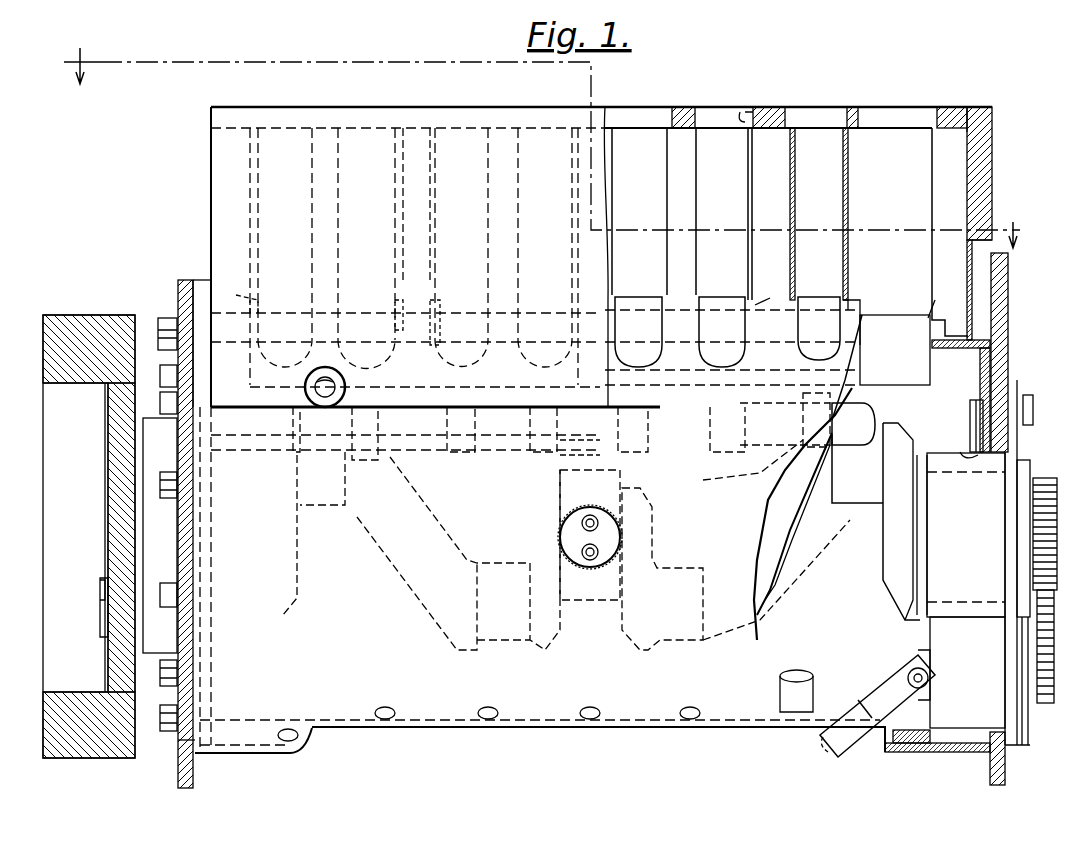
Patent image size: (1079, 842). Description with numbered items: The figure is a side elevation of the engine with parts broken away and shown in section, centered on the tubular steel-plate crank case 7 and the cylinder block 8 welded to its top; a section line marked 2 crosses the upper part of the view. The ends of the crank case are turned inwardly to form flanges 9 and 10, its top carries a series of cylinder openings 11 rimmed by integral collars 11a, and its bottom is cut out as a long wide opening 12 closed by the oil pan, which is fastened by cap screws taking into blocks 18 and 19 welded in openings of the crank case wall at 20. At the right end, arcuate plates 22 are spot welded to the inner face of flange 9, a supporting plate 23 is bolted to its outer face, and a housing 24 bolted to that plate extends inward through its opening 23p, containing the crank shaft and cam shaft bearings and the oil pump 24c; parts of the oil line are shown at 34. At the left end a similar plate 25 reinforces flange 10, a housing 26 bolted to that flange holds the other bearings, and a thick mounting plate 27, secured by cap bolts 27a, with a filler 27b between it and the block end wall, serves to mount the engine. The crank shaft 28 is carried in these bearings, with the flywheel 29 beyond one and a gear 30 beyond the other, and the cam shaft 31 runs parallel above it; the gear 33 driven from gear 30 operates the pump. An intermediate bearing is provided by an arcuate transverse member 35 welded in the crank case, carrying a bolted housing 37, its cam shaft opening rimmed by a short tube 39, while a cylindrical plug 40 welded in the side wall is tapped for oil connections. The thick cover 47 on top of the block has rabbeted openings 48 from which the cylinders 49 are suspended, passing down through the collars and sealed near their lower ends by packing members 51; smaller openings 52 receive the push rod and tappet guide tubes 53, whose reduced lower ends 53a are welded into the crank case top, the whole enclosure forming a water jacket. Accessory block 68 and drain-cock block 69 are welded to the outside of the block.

The section line 2- 2 is at (540, 148).
The crank case 7 is at (354, 704).
The cylinder block 8 is at (205, 190).
The flange 9 is at (990, 368).
The flange 10 is at (195, 735).
The cylinder openings 11 is at (405, 305).
The collars 11a is at (591, 295).
The opening 12 is at (775, 720).
The block 18 is at (813, 680).
The block 19 is at (890, 740).
The weld 20 is at (900, 752).
The plates 22 is at (972, 392).
The supporting plate 23 is at (1020, 775).
The opening 23p is at (985, 760).
The housing 24 is at (1022, 470).
The oil pump 24c is at (945, 645).
The plate 25 is at (215, 700).
The housing 26 is at (155, 450).
The mounting plate 27 is at (178, 775).
The cap bolts 27a is at (158, 320).
The filler 27b is at (198, 280).
The crank shaft 28 is at (770, 578).
The flywheel 29 is at (70, 317).
The gear 30 is at (1045, 480).
The cam shaft 31 is at (492, 448).
The gear 33 is at (1045, 704).
The oil line 34 is at (910, 668).
The member 35 is at (580, 470).
The housing 37 is at (615, 488).
The tubing 39 is at (575, 452).
The cylindrical plug 40 is at (612, 535).
The cover 47 is at (945, 118).
The cylinder openings 48 is at (950, 150).
The cylinders 49 is at (432, 140).
The packing member 51 is at (928, 318).
The openings 52 is at (788, 115).
The push rod and tappet guide tubes 53 is at (525, 145).
The reduced lower end portion 53a is at (848, 302).
The block 68 is at (992, 148).
The block 69 is at (323, 368).